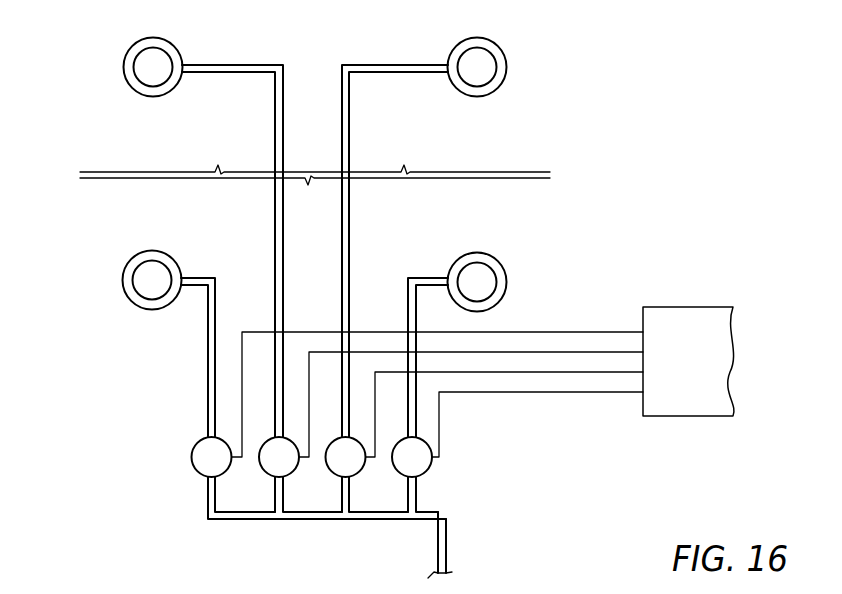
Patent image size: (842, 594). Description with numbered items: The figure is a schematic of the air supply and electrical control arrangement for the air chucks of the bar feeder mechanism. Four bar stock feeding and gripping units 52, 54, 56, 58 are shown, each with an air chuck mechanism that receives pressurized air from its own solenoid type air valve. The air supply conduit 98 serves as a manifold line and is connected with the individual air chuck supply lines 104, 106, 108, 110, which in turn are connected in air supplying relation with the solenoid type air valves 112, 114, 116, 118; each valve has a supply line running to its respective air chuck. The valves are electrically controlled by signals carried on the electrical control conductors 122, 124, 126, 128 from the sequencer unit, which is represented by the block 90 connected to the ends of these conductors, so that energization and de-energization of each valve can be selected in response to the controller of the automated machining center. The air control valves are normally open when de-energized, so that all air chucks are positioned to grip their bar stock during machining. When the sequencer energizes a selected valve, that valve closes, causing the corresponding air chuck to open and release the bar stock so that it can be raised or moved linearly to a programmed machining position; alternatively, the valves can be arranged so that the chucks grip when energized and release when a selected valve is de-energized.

The bar stock feeding and gripping unit 52 is at (121, 277).
The bar stock feeding and gripping unit 54 is at (123, 68).
The bar stock feeding and gripping unit 56 is at (507, 67).
The bar stock feeding and gripping unit 58 is at (503, 265).
The controller 90 is at (710, 401).
The air supply conduit 98 is at (448, 555).
The air chuck supply line 104 is at (206, 497).
The air chuck supply line 106 is at (275, 490).
The air chuck supply line 108 is at (343, 490).
The air chuck supply line 110 is at (418, 492).
The solenoid type air valve 112 is at (191, 457).
The solenoid type air valve 114 is at (267, 438).
The solenoid type air valve 116 is at (335, 438).
The solenoid type air valve 118 is at (433, 465).
The electrical control conductor 122 is at (535, 331).
The electrical control conductor 124 is at (593, 351).
The electrical control conductor 126 is at (600, 373).
The fourth control line 128 is at (558, 393).